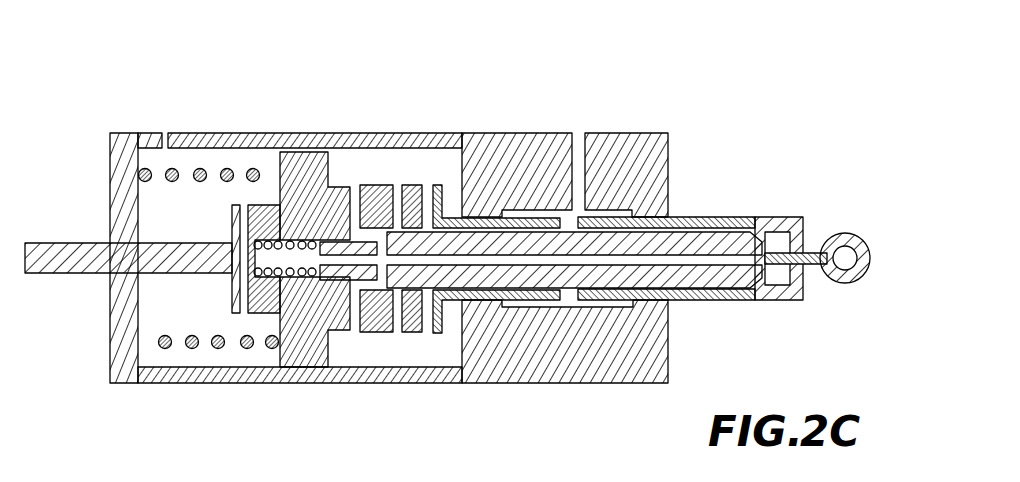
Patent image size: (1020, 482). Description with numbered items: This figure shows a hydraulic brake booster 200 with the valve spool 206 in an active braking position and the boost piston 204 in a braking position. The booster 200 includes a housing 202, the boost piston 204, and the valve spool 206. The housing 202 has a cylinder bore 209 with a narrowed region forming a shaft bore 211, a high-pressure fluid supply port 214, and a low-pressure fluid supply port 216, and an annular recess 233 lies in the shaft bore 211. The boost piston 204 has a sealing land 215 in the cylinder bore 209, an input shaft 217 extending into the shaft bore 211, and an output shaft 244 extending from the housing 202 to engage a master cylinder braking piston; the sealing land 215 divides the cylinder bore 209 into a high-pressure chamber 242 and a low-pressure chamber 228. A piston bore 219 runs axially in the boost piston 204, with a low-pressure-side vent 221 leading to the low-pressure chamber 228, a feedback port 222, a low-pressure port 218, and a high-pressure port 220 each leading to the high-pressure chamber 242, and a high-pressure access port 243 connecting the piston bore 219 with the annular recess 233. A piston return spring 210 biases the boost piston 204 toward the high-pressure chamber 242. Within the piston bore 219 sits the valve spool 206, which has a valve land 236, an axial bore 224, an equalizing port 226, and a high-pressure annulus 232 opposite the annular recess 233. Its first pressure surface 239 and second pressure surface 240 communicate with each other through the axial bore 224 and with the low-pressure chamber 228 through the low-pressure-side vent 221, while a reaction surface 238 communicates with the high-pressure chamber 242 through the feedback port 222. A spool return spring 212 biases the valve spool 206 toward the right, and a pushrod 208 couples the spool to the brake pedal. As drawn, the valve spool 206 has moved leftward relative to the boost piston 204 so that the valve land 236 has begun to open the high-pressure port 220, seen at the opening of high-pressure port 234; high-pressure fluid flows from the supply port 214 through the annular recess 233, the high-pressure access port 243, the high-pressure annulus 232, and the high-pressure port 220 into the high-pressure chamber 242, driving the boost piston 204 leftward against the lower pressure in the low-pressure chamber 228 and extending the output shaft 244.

The hydraulic brake booster 200 is at (178, 46).
The housing 202 is at (497, 145).
The boost piston 204 is at (303, 215).
The valve spool 206 is at (688, 238).
The pushrod 208 is at (840, 237).
The cylinder bore 209 is at (253, 152).
The piston return spring 210 is at (247, 350).
The shaft bore 211 is at (677, 300).
The spool return spring 212 is at (302, 300).
The high-pressure fluid supply port 214 is at (578, 157).
The sealing land 215 is at (292, 320).
The low-pressure fluid supply port 216 is at (163, 133).
The input shaft 217 is at (727, 222).
The low-pressure port 218 is at (397, 188).
The piston bore 219 is at (313, 252).
The high-pressure port 220 is at (430, 192).
The low-pressure-side vent 221 is at (237, 308).
The feedback port 222 is at (355, 190).
The axial bore 224 is at (528, 300).
The equalizing port 226 is at (380, 333).
The low-pressure chamber 228 is at (213, 165).
The high-pressure annulus 232 is at (456, 305).
The annular recess 233 is at (610, 307).
The opening of high-pressure port 234 is at (437, 334).
The valve land 236 is at (417, 188).
The reaction surface 238 is at (356, 333).
The first pressure surface 239 is at (263, 313).
The second pressure surface 240 is at (803, 292).
The high-pressure chamber 242 is at (448, 158).
The high-pressure access port 243 is at (570, 190).
The output shaft 244 is at (62, 262).